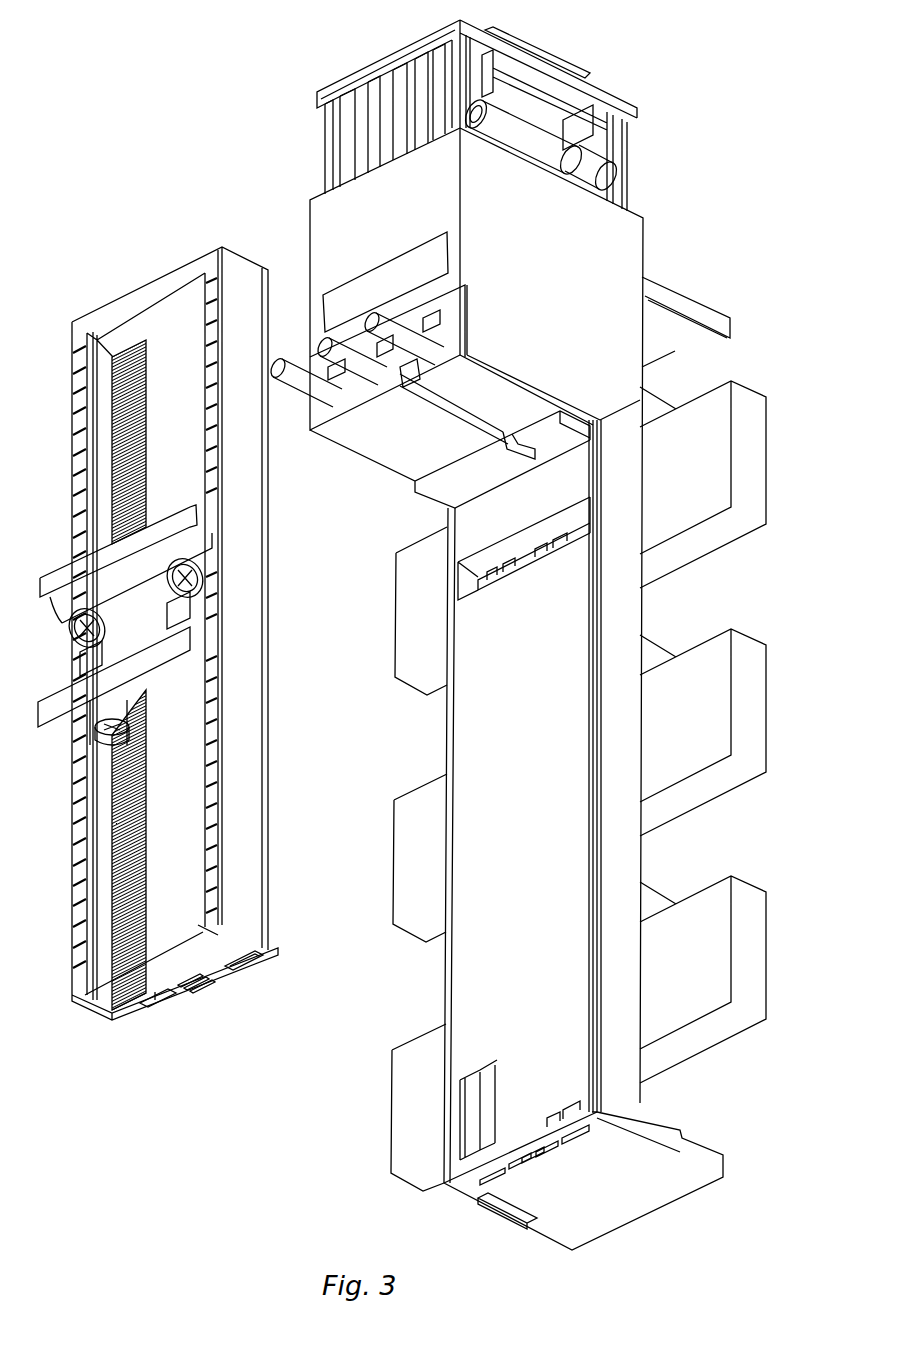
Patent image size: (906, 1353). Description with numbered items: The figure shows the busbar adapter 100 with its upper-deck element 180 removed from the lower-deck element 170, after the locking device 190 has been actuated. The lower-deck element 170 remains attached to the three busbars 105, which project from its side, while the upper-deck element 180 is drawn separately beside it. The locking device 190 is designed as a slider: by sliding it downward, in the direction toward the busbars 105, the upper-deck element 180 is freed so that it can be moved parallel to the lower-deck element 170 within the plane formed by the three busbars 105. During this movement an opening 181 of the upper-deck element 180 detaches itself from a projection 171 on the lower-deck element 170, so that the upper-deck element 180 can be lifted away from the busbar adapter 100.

The busbar adapter 100 is at (692, 56).
The busbars 105 is at (720, 533).
The lower-deck element 170 is at (446, 985).
The projection 171 is at (590, 1107).
The upper-deck element 180 is at (247, 900).
The opening 181 is at (157, 1005).
The locking device 190 is at (465, 413).